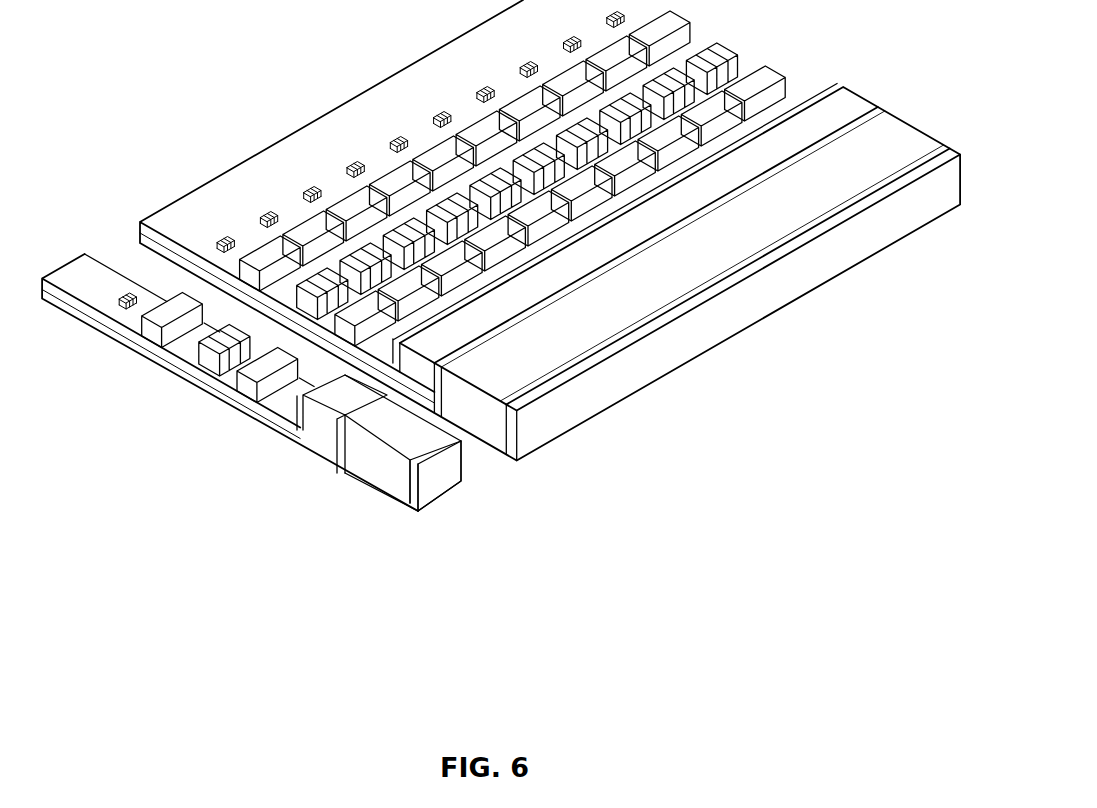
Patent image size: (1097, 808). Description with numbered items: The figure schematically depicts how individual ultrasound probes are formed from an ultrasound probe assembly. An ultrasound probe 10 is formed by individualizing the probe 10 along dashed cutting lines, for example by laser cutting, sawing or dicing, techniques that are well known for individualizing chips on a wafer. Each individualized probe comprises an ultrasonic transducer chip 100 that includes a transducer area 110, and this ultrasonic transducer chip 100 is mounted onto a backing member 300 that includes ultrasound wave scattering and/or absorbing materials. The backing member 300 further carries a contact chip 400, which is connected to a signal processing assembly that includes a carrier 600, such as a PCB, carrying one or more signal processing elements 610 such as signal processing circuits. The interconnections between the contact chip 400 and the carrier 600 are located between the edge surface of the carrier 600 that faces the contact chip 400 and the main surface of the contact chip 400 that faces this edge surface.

The ultrasound probe 10 is at (208, 440).
The ultrasonic transducer chip 100 is at (418, 505).
The transducer area 110 is at (447, 487).
The backing member 300 is at (383, 482).
The contact chip 400 is at (340, 457).
The carrier 600 is at (93, 275).
The signal processing element 610 is at (172, 310).